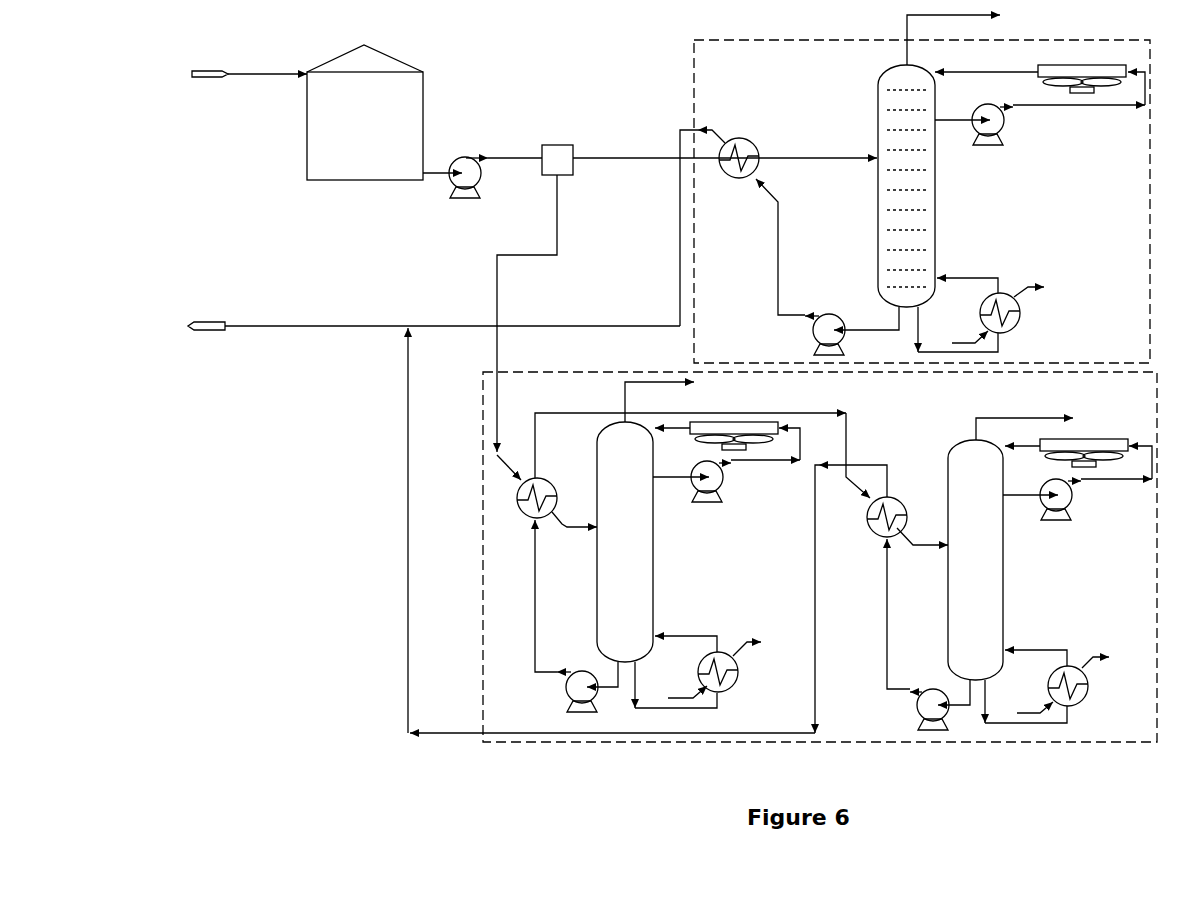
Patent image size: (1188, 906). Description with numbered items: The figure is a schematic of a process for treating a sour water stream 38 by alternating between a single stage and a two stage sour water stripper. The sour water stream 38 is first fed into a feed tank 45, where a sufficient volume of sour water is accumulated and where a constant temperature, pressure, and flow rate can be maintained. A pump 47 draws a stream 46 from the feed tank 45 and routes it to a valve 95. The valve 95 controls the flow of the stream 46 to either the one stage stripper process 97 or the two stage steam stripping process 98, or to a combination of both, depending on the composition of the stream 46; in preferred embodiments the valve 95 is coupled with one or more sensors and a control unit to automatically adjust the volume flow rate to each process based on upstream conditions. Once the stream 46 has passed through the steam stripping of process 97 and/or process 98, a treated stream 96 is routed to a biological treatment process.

The sour water stream 38 is at (234, 71).
The feed tank 45 is at (365, 112).
The stream 46 is at (489, 147).
The pump 47 is at (454, 193).
The valve 95 is at (535, 296).
The treated stream 96 is at (488, 522).
The one stage stripper process 97 is at (861, 189).
The two stage steam stripping process 98 is at (820, 557).